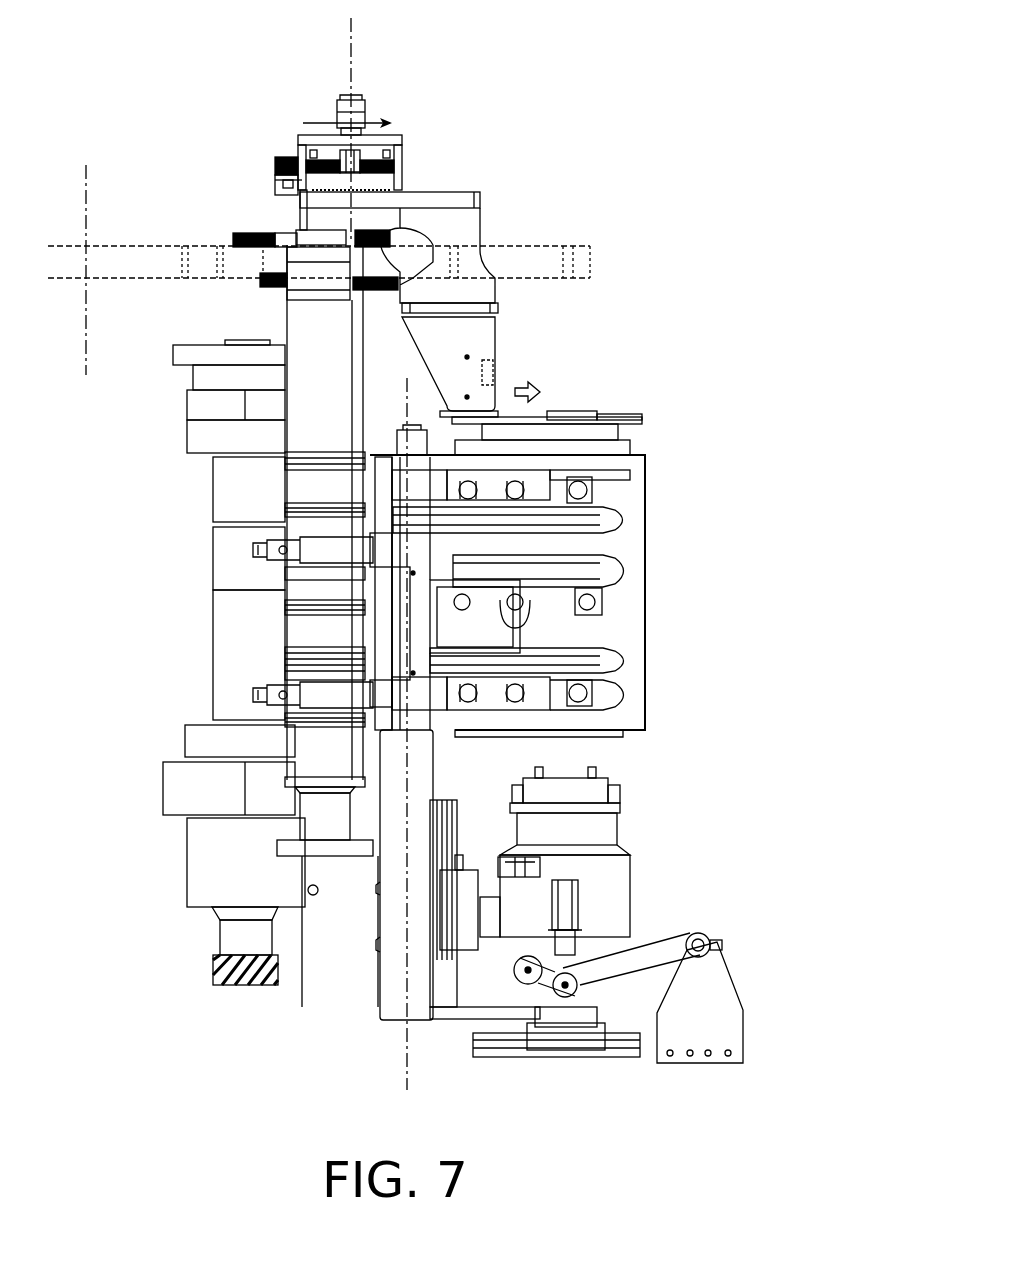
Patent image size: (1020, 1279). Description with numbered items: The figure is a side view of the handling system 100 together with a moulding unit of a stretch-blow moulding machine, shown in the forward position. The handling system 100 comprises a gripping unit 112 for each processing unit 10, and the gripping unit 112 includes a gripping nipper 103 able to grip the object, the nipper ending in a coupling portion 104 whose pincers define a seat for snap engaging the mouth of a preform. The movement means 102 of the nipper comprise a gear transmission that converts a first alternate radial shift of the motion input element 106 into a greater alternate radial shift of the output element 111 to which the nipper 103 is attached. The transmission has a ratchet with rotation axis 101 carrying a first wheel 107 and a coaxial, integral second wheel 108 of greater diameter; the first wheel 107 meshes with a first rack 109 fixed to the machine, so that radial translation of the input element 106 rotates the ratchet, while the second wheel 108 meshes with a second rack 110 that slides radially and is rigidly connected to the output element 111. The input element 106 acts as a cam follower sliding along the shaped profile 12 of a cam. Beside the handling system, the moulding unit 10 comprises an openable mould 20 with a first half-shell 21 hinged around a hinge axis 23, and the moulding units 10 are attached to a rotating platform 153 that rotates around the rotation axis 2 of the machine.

The rotation axis 2 is at (87, 200).
The processing unit 10 is at (160, 988).
The shaped profile 12 is at (168, 452).
The mould 20 is at (660, 540).
The first half-shell 21 is at (622, 618).
The hinge axis 23 is at (408, 402).
The handling system 100 is at (548, 352).
The rotation axis of the ratchet 101 is at (352, 47).
The movement means 102 is at (520, 162).
The gripping nipper 103 is at (568, 417).
The coupling portion 104 is at (625, 418).
The motion input element 106 is at (357, 108).
The first wheel 107 is at (364, 163).
The second wheel 108 is at (402, 187).
The first rack 109 is at (276, 170).
The second rack 110 is at (465, 200).
The output element 111 is at (463, 230).
The gripping unit 112 is at (538, 313).
The rotating platform 153 is at (163, 245).